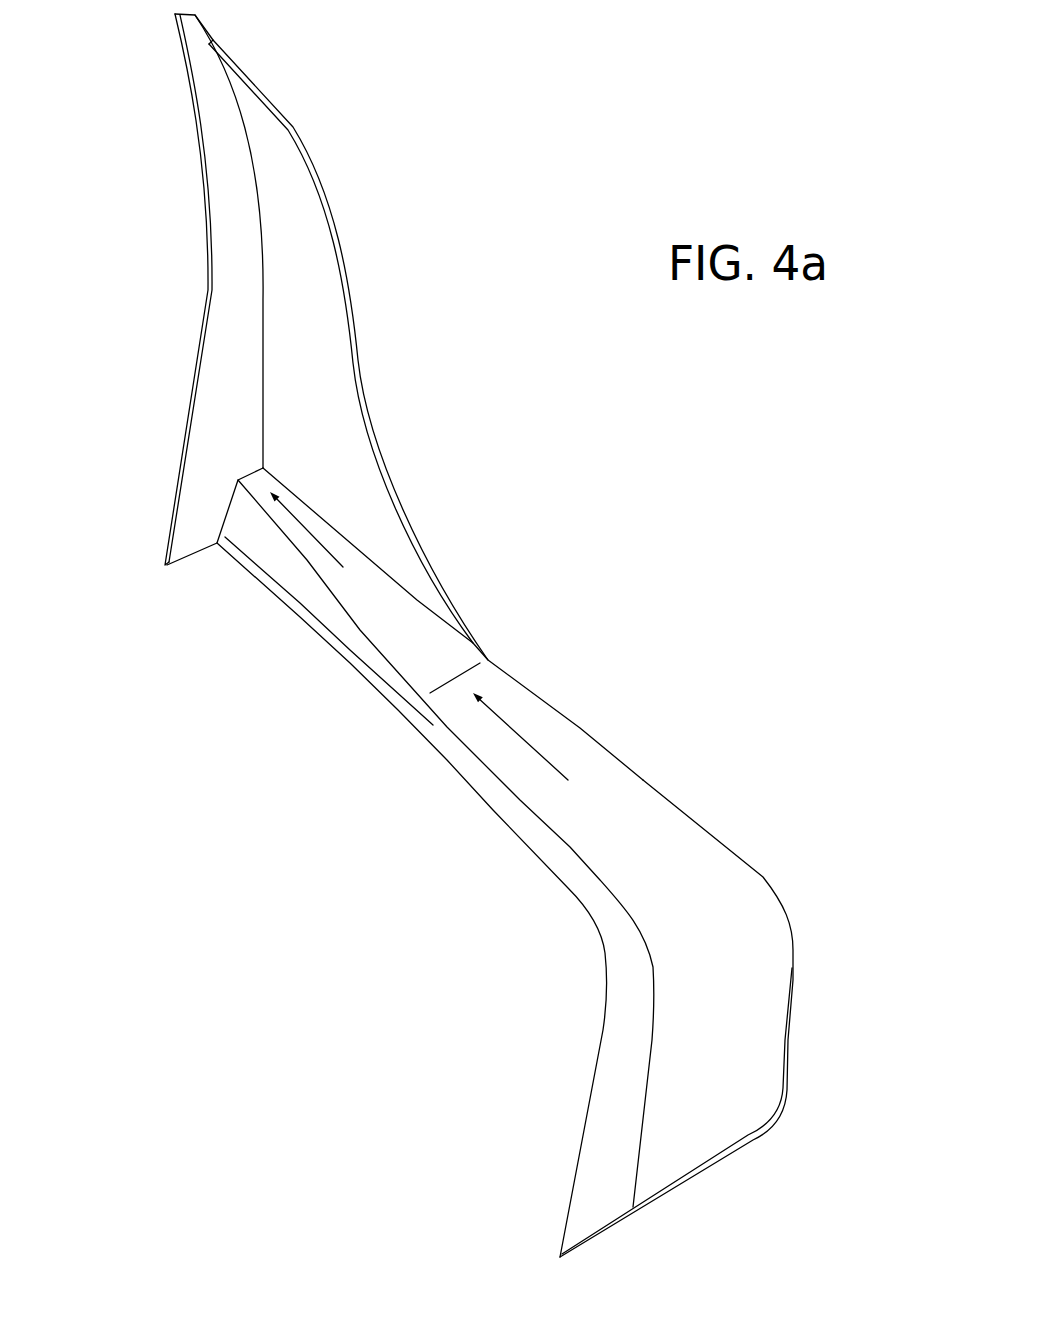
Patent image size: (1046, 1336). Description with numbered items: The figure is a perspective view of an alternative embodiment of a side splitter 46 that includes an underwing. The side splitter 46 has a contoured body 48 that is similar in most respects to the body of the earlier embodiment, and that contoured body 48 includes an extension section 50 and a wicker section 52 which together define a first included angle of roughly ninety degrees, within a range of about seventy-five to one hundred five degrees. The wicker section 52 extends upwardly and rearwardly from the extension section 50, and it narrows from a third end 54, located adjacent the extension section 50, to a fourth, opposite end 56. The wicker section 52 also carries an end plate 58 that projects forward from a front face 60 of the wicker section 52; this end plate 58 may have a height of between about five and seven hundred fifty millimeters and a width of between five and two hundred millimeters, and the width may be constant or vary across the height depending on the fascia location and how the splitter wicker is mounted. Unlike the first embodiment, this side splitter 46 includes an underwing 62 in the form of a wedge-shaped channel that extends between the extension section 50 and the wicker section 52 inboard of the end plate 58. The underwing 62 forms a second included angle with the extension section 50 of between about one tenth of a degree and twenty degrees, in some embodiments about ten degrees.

The side splitter 46 is at (477, 249).
The contoured body 48 is at (475, 632).
The extension section 50 is at (763, 877).
The wicker section 52 is at (183, 447).
The third end 54 is at (203, 550).
The fourth end 56 is at (176, 28).
The end plate 58 is at (355, 437).
The front face 60 is at (233, 273).
The underwing 62 is at (307, 588).